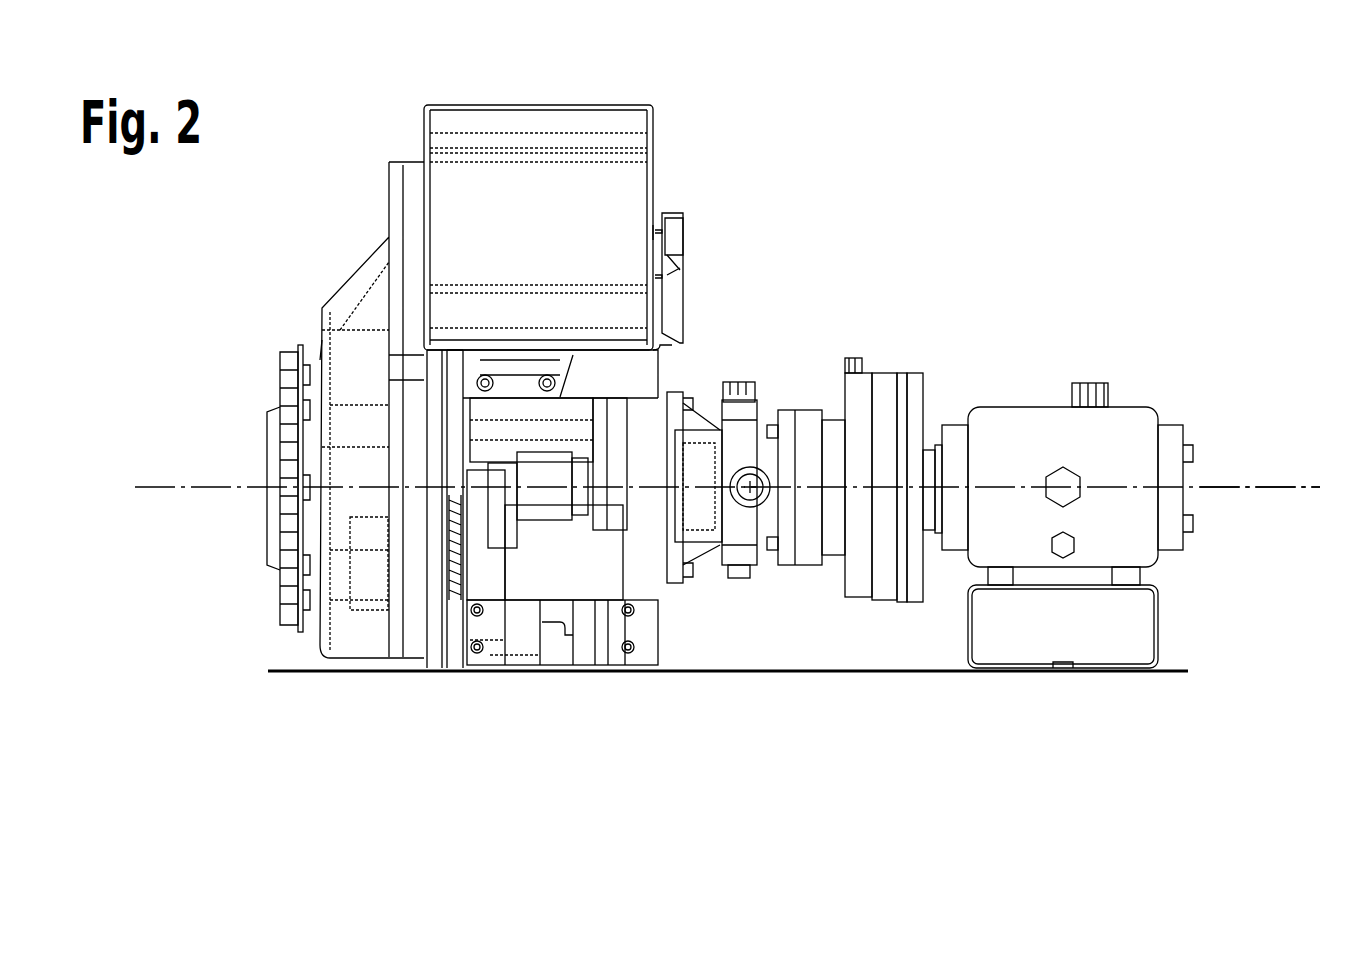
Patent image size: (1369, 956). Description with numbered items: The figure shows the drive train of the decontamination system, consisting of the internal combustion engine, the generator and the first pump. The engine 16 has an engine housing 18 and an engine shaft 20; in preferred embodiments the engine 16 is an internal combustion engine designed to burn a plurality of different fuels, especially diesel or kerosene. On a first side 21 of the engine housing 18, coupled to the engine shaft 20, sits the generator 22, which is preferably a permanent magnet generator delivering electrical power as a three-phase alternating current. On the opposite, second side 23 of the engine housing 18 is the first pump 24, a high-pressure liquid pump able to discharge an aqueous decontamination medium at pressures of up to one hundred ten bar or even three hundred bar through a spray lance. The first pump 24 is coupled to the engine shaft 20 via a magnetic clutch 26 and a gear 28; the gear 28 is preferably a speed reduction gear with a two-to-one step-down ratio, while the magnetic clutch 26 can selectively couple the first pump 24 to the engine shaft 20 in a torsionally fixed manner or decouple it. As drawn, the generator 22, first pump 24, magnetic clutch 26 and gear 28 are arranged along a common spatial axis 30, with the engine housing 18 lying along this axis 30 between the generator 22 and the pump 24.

The engine 16 is at (542, 95).
The engine housing 18 is at (585, 650).
The engine shaft 20 is at (540, 503).
The first side 21 is at (320, 320).
The generator 22 is at (270, 570).
The second side 23 is at (660, 353).
The first pump 24 is at (1133, 430).
The magnetic clutch 26 is at (887, 577).
The gear 28 is at (758, 542).
The common spatial axis 30 is at (1298, 492).